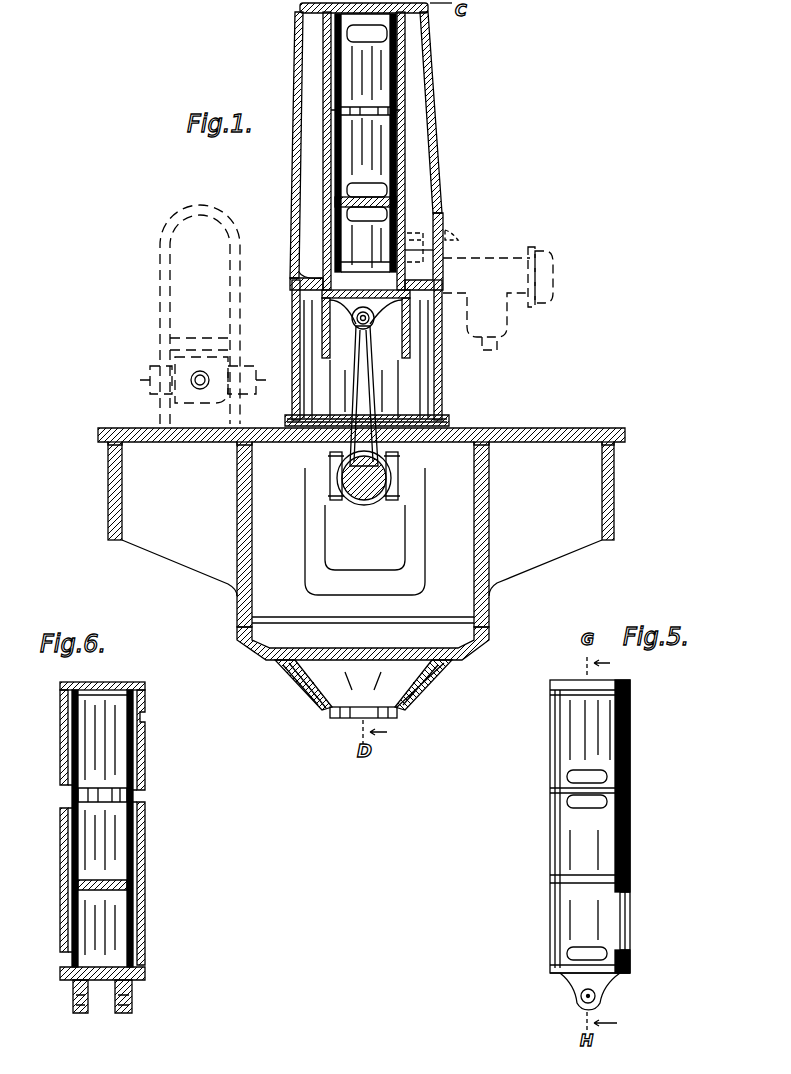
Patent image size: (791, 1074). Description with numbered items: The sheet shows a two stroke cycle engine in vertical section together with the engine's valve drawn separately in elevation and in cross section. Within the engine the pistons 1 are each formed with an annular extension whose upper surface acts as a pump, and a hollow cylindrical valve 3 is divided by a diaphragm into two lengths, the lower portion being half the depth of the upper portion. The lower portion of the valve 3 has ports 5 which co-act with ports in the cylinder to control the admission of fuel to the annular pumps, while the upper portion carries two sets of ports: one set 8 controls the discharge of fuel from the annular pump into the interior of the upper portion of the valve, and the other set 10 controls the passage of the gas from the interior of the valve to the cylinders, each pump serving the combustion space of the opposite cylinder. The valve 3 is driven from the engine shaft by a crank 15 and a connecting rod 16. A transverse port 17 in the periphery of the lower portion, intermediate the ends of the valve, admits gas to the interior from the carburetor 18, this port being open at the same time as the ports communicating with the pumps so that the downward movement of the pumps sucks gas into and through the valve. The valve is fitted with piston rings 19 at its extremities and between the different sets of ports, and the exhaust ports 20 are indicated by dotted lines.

In FIG. 1, the piston 1 is at (412, 46).
In FIG. 1, the valve 3 is at (400, 78).
In FIG. 6, the valve 3 is at (85, 707).
In FIG. 5, the valve 3 is at (587, 727).
In FIG. 1, the ports 5 is at (365, 143).
In FIG. 6, the ports 5 is at (140, 893).
In FIG. 5, the ports 5 is at (585, 952).
In FIG. 1, the ports 8 is at (363, 192).
In FIG. 6, the ports 8 is at (63, 808).
In FIG. 5, the ports 8 is at (588, 802).
In FIG. 1, the ports 10 is at (352, 33).
In FIG. 6, the ports 10 is at (140, 717).
In FIG. 5, the ports 10 is at (570, 776).
In FIG. 1, the crank 15 is at (318, 478).
In FIG. 1, the connecting rod 16 is at (395, 452).
In FIG. 1, the transverse port 17 is at (412, 242).
In FIG. 5, the transverse port 17 is at (623, 947).
In FIG. 1, the carburetor 18 is at (478, 268).
In FIG. 1, the piston rings 19 is at (403, 115).
In FIG. 6, the piston rings 19 is at (143, 684).
In FIG. 1, the exhaust ports 20 is at (440, 230).